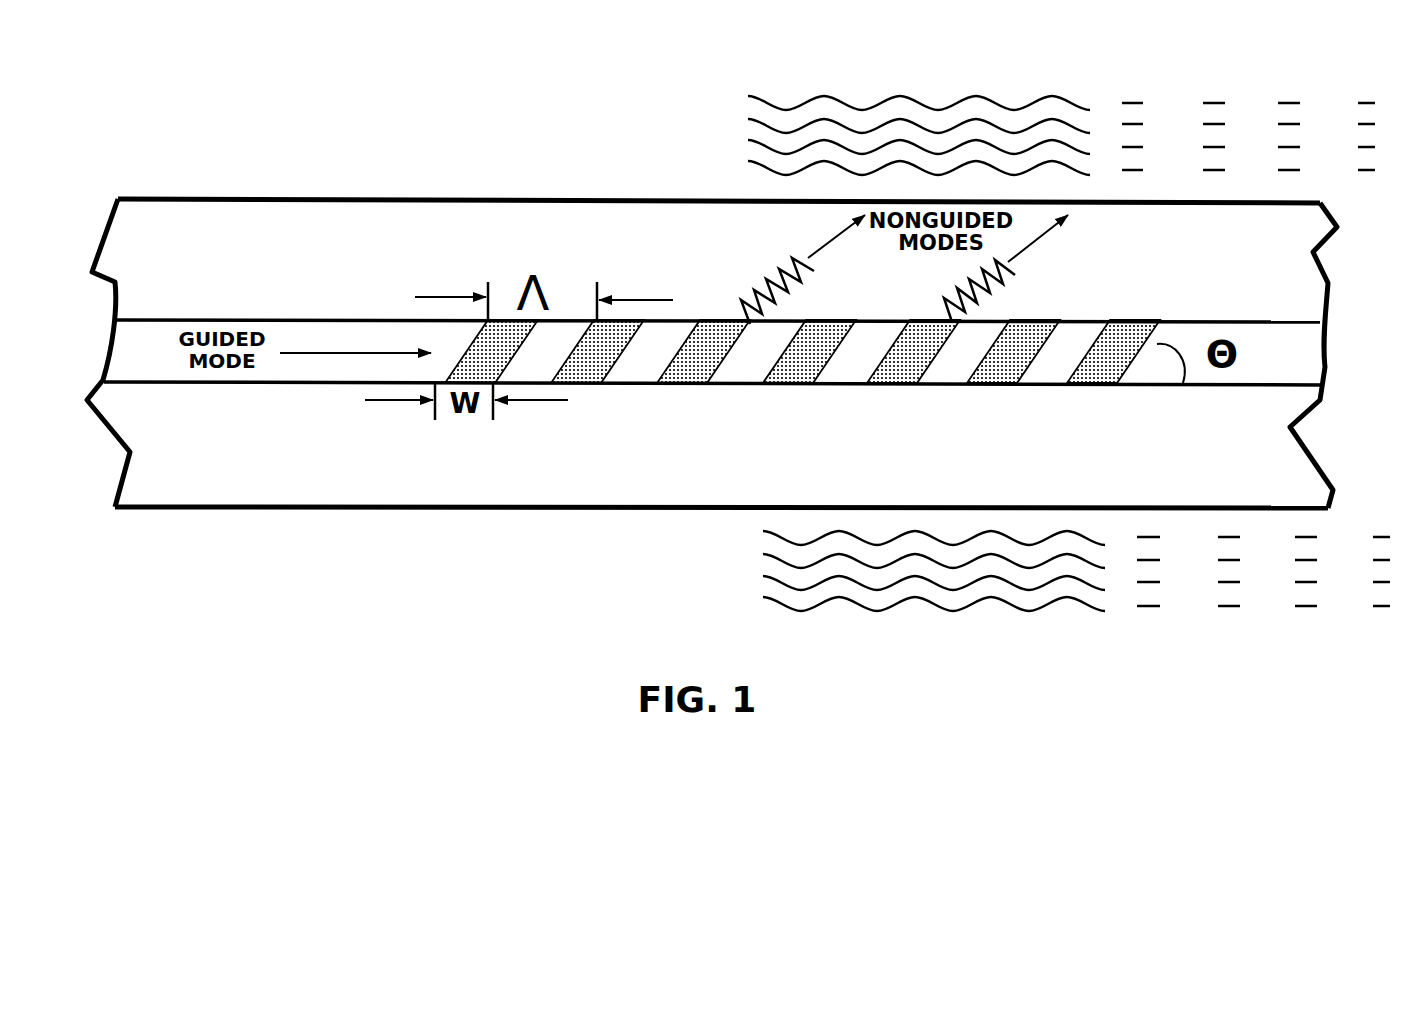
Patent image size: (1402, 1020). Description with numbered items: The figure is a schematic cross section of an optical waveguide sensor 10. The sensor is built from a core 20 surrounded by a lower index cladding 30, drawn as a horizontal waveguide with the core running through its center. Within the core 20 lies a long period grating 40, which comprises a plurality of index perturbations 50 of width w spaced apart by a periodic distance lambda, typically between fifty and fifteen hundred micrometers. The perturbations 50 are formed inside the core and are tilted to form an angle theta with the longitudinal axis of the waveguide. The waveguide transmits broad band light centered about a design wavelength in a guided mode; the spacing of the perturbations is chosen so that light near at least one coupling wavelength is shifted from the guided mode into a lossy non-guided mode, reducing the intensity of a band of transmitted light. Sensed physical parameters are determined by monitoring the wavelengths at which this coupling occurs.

The optical waveguide sensor 10 is at (466, 546).
The core 20 is at (158, 372).
The lower index cladding 30 is at (383, 263).
The long period grating 40 is at (422, 420).
The index perturbation 50 is at (1137, 320).